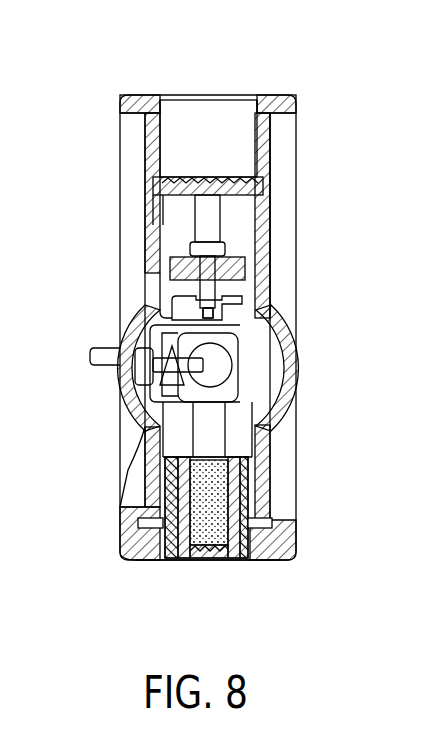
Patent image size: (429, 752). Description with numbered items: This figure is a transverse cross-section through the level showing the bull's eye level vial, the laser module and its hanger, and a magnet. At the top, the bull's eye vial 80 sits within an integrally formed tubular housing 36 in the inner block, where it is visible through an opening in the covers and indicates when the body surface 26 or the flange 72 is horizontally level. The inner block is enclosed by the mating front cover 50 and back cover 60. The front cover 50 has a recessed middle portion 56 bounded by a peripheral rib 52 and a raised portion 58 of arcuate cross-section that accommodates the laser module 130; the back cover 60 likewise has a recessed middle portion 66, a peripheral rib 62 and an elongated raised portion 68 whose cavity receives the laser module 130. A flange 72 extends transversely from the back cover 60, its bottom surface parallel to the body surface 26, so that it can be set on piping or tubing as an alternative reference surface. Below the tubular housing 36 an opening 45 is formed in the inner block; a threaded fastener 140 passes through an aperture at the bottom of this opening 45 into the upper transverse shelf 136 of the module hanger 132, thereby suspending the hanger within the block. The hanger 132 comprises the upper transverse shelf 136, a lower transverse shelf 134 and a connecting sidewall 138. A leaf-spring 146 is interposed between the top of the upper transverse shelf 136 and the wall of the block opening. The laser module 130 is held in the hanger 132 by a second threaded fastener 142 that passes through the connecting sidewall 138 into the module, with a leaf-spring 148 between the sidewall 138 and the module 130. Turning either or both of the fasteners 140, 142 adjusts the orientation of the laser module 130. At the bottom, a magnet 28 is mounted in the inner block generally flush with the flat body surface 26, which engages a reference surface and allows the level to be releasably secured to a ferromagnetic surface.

The body surface 26 is at (152, 554).
The magnets 28 is at (214, 566).
The tubular housing 36 is at (274, 96).
The opening 45 is at (220, 222).
The front cover 50 is at (299, 96).
The peripheral rib 52 is at (297, 107).
The recessed middle portion 56 is at (264, 232).
The raised portion 58 is at (296, 398).
The back cover 60 is at (126, 94).
The peripheral rib 62 is at (136, 101).
The recessed middle portion 66 is at (147, 215).
The elongated raised portion 68 is at (130, 428).
The flange 72 is at (90, 349).
The bull's eye vial 80 is at (190, 99).
The laser module 130 is at (240, 333).
The module hanger 132 is at (168, 306).
The lower transverse shelf 134 is at (162, 440).
The upper transverse shelf 136 is at (224, 314).
The connecting sidewall 138 is at (166, 394).
The threaded fastener 140 is at (236, 262).
The threaded fastener 142 is at (136, 376).
The leaf-spring 146 is at (242, 300).
The leaf-spring 148 is at (172, 382).